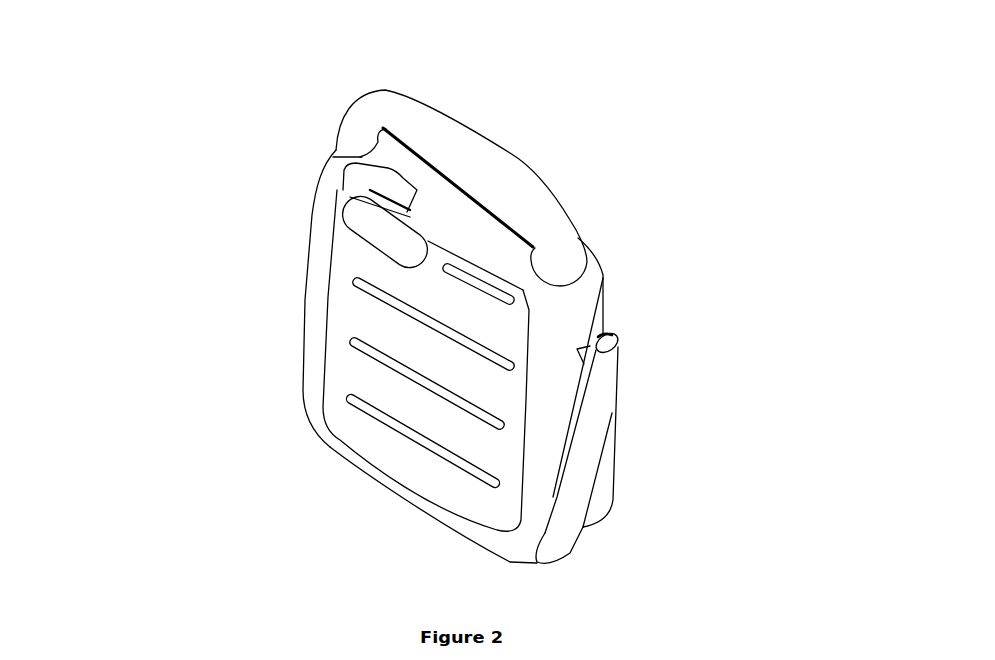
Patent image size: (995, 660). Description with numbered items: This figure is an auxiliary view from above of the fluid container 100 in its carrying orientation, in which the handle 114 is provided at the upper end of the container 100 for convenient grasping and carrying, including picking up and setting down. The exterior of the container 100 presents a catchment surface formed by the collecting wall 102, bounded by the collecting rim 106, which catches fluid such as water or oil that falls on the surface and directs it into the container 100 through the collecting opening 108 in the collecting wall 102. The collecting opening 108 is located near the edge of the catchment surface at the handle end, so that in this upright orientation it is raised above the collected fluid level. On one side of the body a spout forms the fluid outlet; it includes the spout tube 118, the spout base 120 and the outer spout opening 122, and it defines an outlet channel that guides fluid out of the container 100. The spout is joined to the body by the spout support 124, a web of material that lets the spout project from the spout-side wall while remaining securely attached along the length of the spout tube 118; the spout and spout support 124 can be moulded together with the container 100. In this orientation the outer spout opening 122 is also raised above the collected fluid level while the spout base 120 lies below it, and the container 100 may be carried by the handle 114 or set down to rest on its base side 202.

The fluid container 100 is at (162, 82).
The collecting wall 102 is at (393, 337).
The collecting rim 106 is at (325, 442).
The collecting opening 108 is at (368, 223).
The handle 114 is at (455, 143).
The spout tube 118 is at (587, 462).
The spout base 120 is at (557, 547).
The outer spout opening 122 is at (612, 342).
The spout support 124 is at (603, 278).
The base side 202 is at (434, 535).